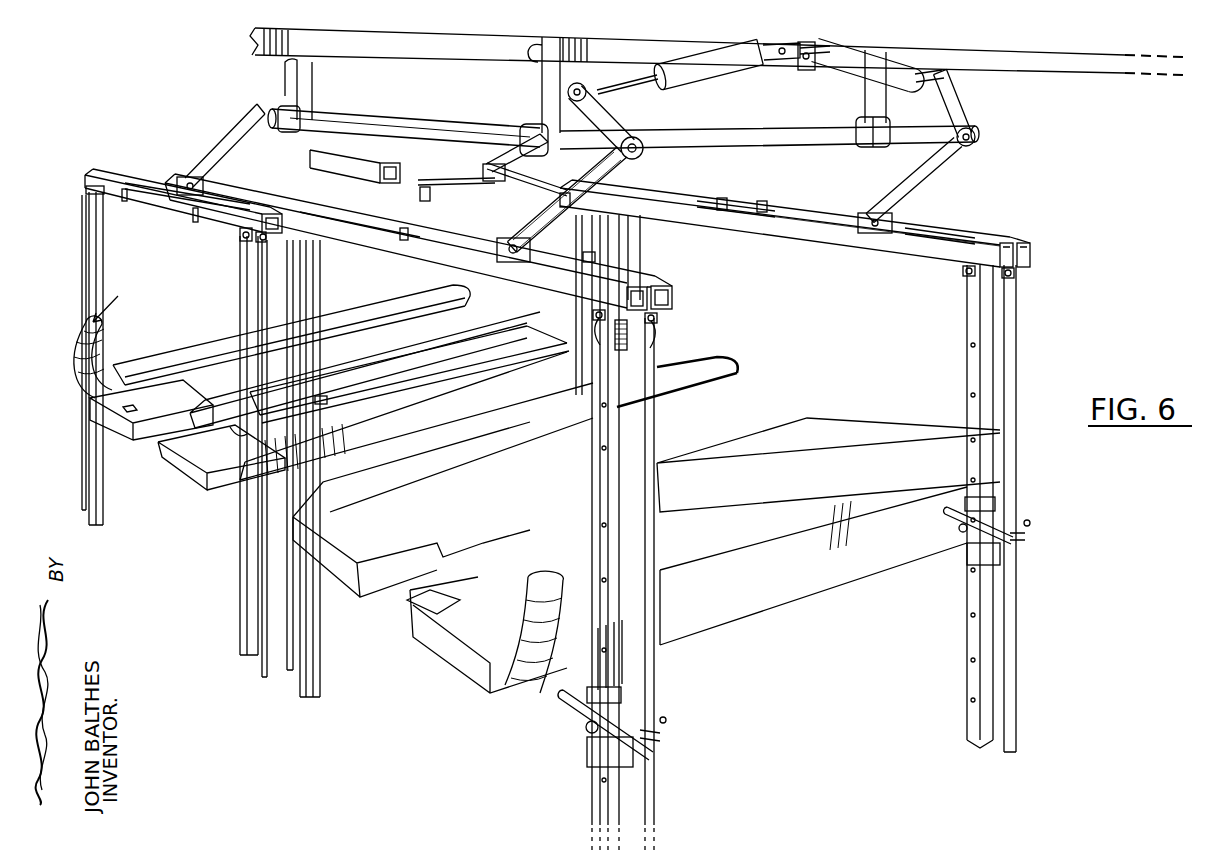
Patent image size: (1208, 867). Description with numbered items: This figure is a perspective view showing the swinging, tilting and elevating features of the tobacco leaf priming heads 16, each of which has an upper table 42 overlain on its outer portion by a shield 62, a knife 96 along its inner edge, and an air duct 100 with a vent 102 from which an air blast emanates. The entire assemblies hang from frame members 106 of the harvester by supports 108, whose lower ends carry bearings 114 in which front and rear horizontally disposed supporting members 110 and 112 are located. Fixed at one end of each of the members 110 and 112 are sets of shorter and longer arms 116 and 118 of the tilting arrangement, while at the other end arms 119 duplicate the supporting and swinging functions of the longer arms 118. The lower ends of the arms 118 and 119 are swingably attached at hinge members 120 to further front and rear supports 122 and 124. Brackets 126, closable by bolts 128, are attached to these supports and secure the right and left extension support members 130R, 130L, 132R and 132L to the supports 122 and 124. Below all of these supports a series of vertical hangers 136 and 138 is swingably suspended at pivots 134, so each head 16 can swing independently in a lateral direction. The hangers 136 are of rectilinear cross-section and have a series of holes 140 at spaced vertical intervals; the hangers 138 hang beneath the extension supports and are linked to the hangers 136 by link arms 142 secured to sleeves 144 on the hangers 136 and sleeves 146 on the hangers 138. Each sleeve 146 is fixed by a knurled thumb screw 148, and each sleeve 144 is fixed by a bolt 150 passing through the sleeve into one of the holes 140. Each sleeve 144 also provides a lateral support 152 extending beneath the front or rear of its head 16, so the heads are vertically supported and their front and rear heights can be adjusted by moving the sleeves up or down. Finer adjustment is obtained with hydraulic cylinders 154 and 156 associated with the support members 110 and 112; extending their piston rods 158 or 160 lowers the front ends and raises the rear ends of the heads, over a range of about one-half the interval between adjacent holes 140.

The tobacco priming head 16 is at (501, 497).
The table 42 is at (722, 466).
The shield 62 is at (185, 353).
The knife 96 is at (540, 521).
The air duct 100 is at (70, 347).
The vent 102 is at (135, 406).
The frame member 106 is at (408, 50).
The support 108 is at (290, 82).
The front supporting member 110 is at (344, 128).
The rear supporting member 112 is at (770, 127).
The bearing 114 is at (282, 112).
The shorter arm 116 is at (645, 143).
The longer arm 118 is at (605, 167).
The arm 119 is at (228, 143).
The hinge member 120 is at (182, 177).
The front support 122 is at (320, 227).
The rear support 124 is at (806, 234).
The bracket 126 is at (222, 194).
The bolt 128 is at (432, 216).
The right extension support member 130R is at (178, 209).
The left extension support member 130L is at (663, 285).
The right extension support member 132R is at (383, 174).
The left extension support member 132L is at (1012, 240).
The pivot 134 is at (84, 188).
The hanger 136 is at (100, 526).
The hanger 138 is at (82, 473).
The hole 140 is at (972, 386).
The link arm 142 is at (967, 553).
The sleeve 144 is at (997, 504).
The sleeve 146 is at (1027, 541).
The knurled thumb screw 148 is at (1030, 525).
The bolt 150 is at (960, 531).
The lateral support 152 is at (946, 512).
The hydraulic cylinder 154 is at (702, 60).
The hydraulic cylinder 156 is at (857, 63).
The piston rod 158 is at (625, 73).
The piston rod 160 is at (935, 70).